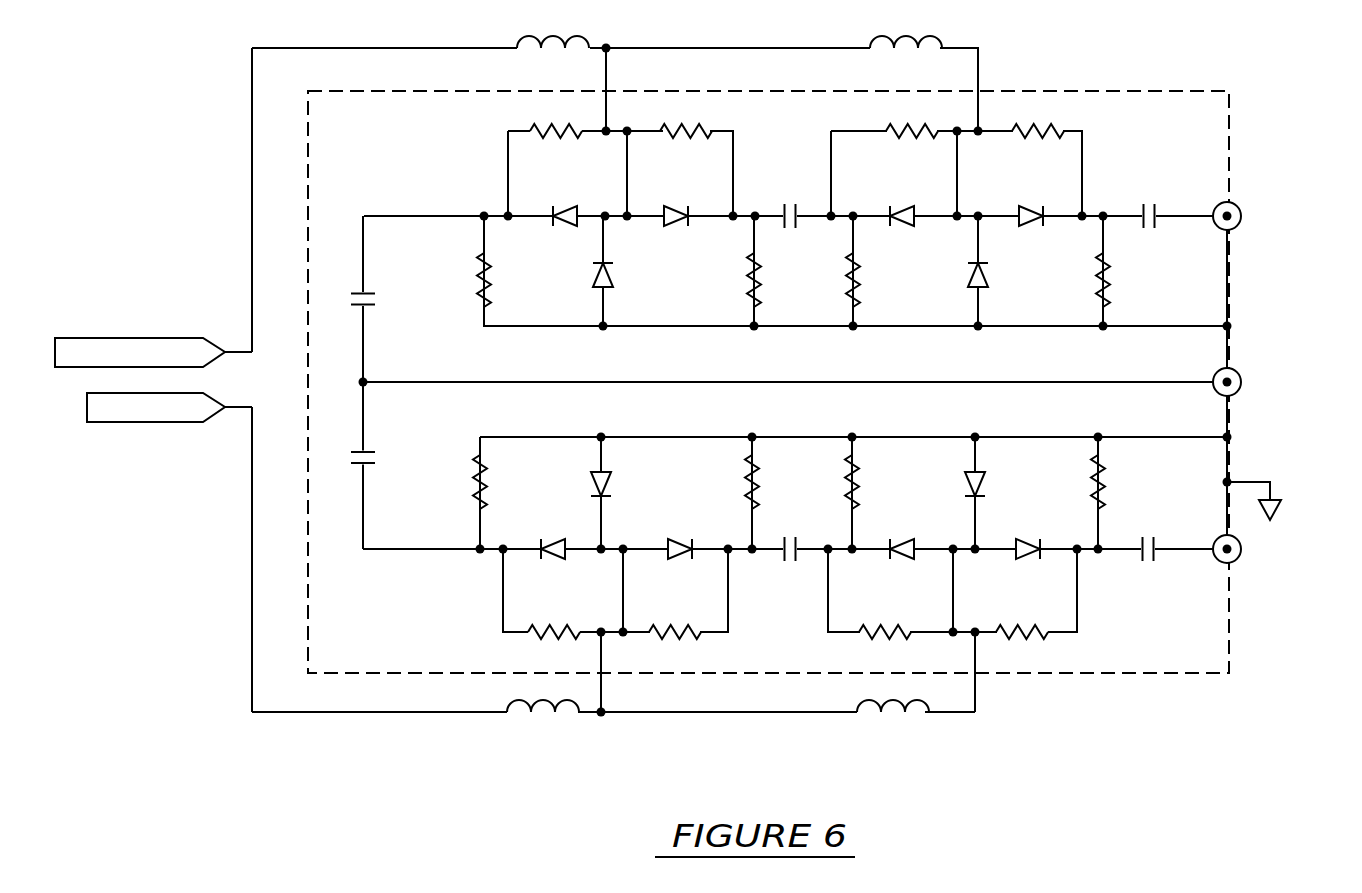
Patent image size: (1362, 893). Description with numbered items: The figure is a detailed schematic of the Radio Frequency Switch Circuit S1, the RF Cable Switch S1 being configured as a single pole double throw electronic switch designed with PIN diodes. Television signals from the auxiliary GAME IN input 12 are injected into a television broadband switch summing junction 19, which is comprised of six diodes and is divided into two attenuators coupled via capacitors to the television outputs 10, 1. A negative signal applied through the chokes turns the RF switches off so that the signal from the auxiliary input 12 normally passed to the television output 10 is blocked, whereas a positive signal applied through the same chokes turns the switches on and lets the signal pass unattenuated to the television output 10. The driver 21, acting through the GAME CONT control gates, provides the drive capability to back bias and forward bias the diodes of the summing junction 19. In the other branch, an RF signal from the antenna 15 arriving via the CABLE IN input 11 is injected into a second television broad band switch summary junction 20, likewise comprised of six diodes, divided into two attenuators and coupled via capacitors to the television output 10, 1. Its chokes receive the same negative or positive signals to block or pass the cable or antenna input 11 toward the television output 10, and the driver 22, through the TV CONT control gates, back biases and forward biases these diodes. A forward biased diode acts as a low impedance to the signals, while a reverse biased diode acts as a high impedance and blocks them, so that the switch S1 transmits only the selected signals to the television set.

The television broadband switch summing junction 19 is at (766, 124).
The television broad band switch summary junction 20 is at (775, 633).
The auxiliary (GAME IN) input 12 is at (1237, 208).
The television output 10 is at (1264, 373).
The television output 1 is at (1234, 371).
The CABLE IN input 11 is at (1283, 535).
The antenna 15 is at (1240, 543).
The driver 21 is at (168, 338).
The driver 22 is at (183, 423).
The RF Cable Switch S1 is at (172, 679).